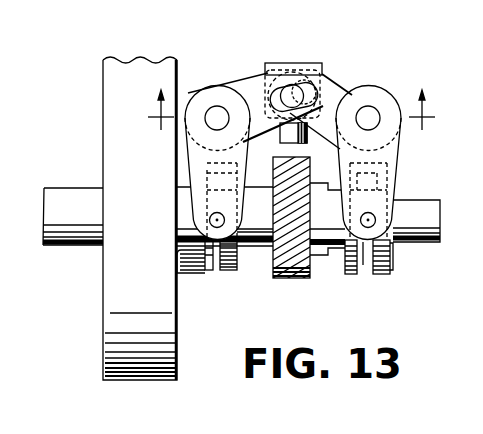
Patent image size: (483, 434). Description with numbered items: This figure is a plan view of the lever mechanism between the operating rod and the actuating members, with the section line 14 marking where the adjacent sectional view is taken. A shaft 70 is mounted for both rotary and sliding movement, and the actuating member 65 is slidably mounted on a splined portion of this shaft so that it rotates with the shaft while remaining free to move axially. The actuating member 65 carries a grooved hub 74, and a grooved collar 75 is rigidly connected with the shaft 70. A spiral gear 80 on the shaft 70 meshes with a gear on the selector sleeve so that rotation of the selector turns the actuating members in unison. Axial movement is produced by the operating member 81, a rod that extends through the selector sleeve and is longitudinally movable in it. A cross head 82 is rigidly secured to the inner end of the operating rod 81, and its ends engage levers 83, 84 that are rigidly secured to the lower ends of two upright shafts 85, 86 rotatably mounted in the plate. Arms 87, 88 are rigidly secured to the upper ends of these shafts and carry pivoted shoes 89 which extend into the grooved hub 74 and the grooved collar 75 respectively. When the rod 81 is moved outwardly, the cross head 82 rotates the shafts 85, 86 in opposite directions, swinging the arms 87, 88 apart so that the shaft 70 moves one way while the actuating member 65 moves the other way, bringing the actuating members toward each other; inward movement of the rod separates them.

The section line 14- 14 is at (288, 99).
The actuating member 65 is at (165, 327).
The shaft 70 is at (428, 222).
The grooved hub 74 is at (239, 266).
The grooved collar 75 is at (380, 268).
The spiral gear 80 is at (283, 280).
The operating member 81 is at (307, 142).
The cross head 82 is at (322, 72).
The lever 83 is at (350, 87).
The lever 84 is at (255, 86).
The upright shaft 85 is at (368, 112).
The upright shaft 86 is at (216, 113).
The arm 87 is at (398, 160).
The arm 88 is at (190, 157).
The pivoted shoe 89 is at (213, 248).